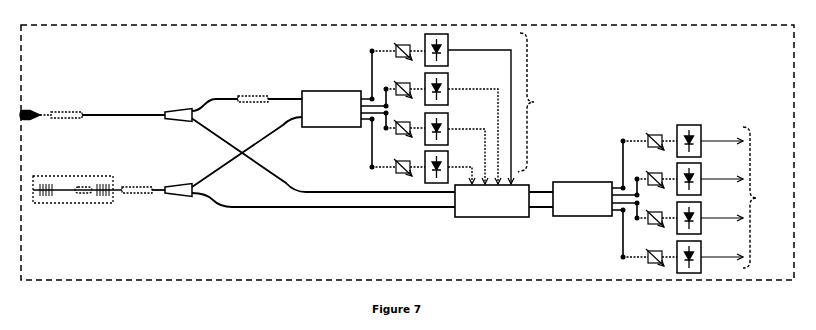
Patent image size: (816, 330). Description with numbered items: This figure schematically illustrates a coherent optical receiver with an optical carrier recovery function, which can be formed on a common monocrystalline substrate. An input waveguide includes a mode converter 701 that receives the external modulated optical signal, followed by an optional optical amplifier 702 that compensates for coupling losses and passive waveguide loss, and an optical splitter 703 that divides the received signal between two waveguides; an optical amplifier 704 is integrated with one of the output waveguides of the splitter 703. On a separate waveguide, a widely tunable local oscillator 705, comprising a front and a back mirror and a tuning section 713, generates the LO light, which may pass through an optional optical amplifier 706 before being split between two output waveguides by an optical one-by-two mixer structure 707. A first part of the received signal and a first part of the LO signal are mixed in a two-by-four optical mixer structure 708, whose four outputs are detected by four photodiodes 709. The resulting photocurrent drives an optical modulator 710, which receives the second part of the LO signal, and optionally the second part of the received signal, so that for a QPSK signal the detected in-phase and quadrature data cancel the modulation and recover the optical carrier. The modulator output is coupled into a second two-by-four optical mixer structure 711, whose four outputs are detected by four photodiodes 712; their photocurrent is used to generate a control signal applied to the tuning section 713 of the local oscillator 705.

The mode converter 701 is at (37, 107).
The optical amplifier 702 is at (66, 110).
The optical splitter 703 is at (176, 106).
The optical amplifier 704 is at (250, 92).
The widely tunable local oscillator 705 is at (66, 204).
The optical amplifier 706 is at (140, 196).
The optical 1×2 mixer structure 707 is at (185, 198).
The 2×4 optical mixer structure 708 is at (331, 89).
The photodiodes 709 is at (545, 100).
The optical modulator 710 is at (470, 219).
The 2×4 optical mixer structure 711 is at (585, 179).
The photodiodes 712 is at (716, 199).
The tuning section 713 is at (88, 185).